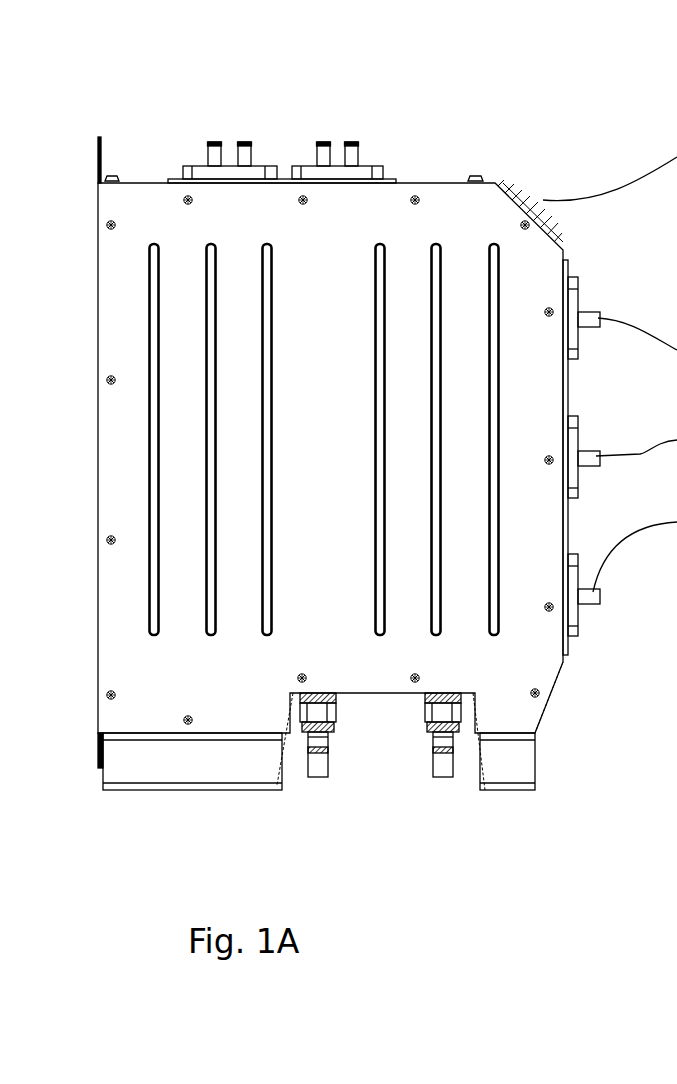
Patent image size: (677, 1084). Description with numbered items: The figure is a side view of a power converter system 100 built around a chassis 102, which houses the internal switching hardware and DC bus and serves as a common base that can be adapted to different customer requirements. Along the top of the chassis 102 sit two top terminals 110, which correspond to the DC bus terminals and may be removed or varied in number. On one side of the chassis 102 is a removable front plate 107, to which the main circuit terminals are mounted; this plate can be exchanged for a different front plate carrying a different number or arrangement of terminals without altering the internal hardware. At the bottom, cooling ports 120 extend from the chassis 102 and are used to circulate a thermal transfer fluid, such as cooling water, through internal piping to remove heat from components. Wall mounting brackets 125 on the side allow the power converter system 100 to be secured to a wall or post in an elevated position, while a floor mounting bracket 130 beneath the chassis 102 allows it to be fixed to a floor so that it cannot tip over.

The power converter system 100 is at (393, 106).
The chassis 102 is at (104, 476).
The front plate 107 is at (572, 646).
The top terminals 110 is at (352, 142).
The cooling ports 120 is at (323, 767).
The wall mounting brackets 125 is at (98, 138).
The floor mounting bracket 130 is at (223, 783).